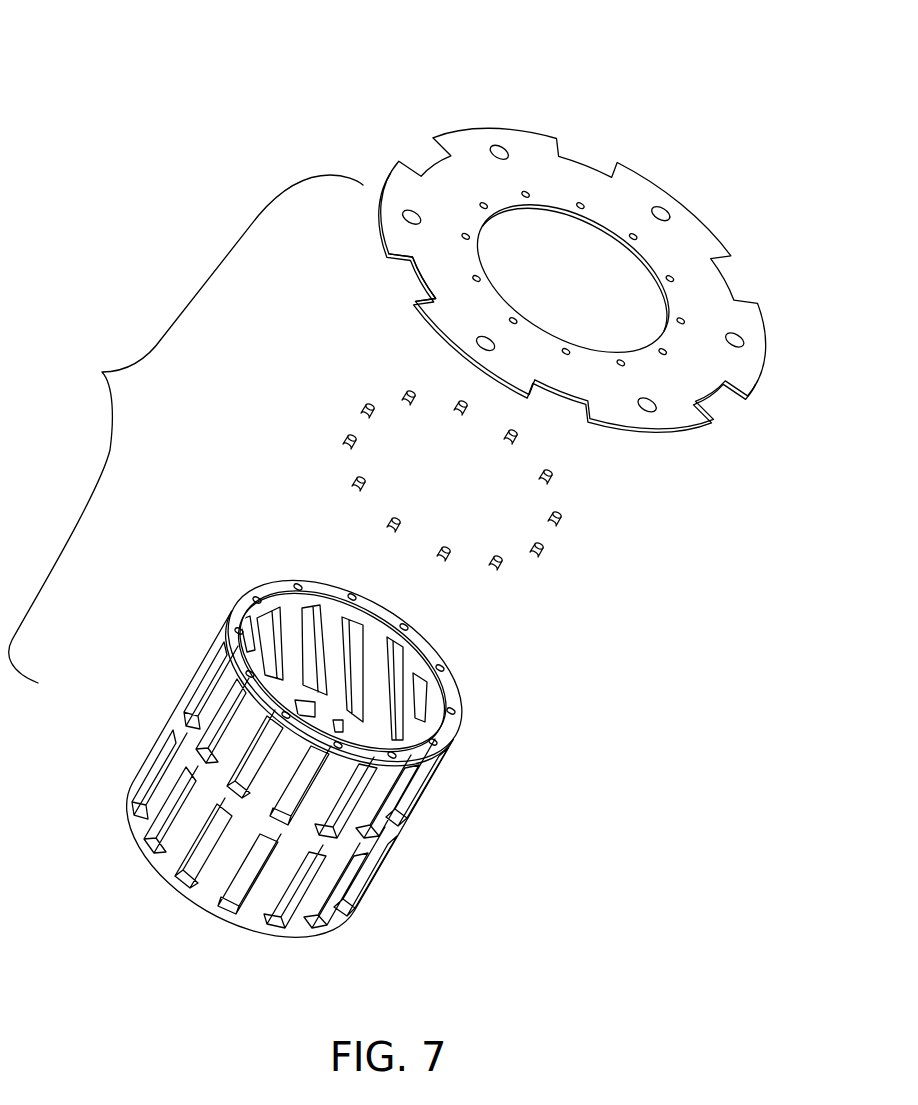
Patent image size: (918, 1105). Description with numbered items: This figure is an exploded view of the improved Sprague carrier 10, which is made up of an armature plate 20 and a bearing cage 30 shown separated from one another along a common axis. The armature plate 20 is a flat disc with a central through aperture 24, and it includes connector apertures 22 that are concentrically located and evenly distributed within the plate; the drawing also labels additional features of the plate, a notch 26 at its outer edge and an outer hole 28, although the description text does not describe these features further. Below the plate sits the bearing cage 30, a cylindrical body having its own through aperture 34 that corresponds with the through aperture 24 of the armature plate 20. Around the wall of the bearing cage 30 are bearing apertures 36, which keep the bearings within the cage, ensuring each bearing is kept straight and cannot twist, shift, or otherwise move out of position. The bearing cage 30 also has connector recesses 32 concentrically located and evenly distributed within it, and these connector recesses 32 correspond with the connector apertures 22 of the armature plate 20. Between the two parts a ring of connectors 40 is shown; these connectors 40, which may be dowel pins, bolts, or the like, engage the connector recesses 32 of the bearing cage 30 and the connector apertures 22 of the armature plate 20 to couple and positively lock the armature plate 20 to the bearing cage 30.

The Sprague carrier 10 is at (186, 429).
The armature plate 20 is at (453, 172).
The connector apertures 22 is at (527, 193).
The through aperture 24 is at (572, 252).
The notch 26 is at (402, 283).
The mounting holes 28 is at (745, 347).
The bearing cage 30 is at (383, 842).
The connector recesses 32 is at (298, 582).
The through aperture 34 is at (352, 668).
The bearing apertures 36 is at (240, 884).
The connectors 40 is at (542, 562).